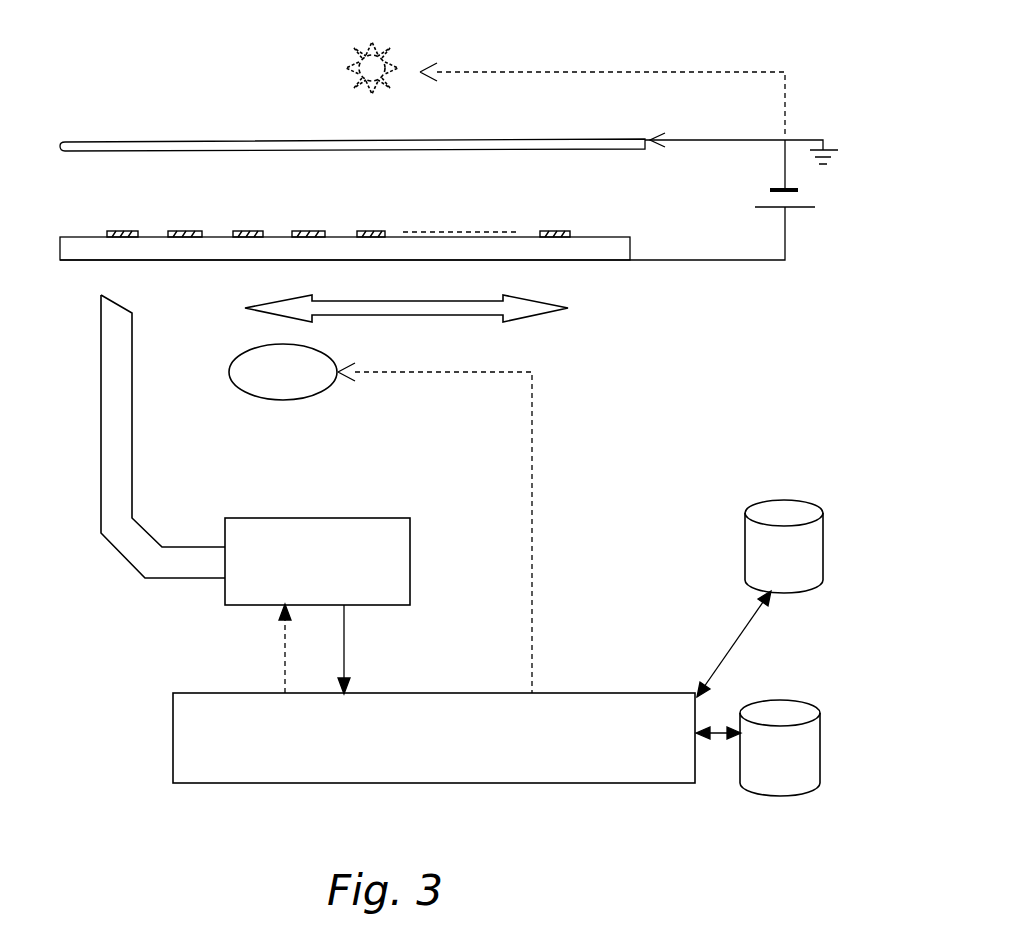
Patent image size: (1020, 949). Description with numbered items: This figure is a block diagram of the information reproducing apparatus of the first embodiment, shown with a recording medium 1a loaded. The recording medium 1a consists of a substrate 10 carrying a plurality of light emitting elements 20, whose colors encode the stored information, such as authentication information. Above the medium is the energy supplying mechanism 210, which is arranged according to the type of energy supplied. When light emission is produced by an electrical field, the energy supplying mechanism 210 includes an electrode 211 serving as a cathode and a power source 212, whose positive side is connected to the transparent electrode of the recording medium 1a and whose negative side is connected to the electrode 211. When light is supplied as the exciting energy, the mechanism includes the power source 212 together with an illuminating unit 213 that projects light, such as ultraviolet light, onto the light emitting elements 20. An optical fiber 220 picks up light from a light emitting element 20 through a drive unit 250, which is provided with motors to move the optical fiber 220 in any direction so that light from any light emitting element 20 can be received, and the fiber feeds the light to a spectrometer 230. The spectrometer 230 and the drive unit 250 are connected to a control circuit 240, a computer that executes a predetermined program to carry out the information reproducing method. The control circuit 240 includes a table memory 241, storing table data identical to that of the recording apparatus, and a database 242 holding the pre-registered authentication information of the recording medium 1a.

The illuminating unit 213 is at (415, 52).
The electrode 211 is at (470, 140).
The energy supplying mechanism 210 is at (787, 138).
The power source 212 is at (808, 198).
The substrate 10 is at (632, 238).
The recording medium 1a is at (630, 250).
The light emitting elements 20 is at (560, 232).
The drive unit 250 is at (333, 397).
The optical fiber 220 is at (135, 437).
The spectrometer 230 is at (412, 530).
The control circuit 240 is at (560, 693).
The database 242 is at (765, 500).
The table memory 241 is at (768, 705).